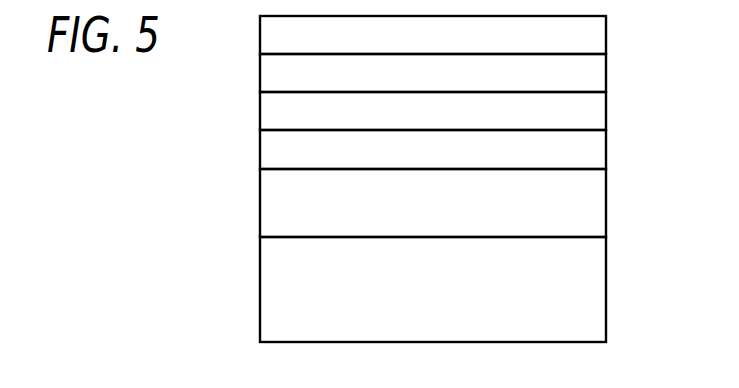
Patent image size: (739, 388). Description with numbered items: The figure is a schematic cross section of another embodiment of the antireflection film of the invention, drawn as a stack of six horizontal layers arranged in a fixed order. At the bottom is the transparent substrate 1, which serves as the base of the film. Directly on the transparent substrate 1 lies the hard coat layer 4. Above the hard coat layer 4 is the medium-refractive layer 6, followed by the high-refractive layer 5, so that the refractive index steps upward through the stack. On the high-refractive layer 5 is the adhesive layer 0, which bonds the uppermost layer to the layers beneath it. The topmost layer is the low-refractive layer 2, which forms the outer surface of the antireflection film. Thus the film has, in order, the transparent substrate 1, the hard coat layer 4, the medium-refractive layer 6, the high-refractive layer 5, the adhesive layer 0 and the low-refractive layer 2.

The low-refractive layer 2 is at (608, 35).
The adhesive layer 0 is at (608, 73).
The high-refractive layer 5 is at (608, 112).
The medium-refractive layer 6 is at (608, 151).
The hard coat layer 4 is at (608, 205).
The transparent substrate 1 is at (608, 290).